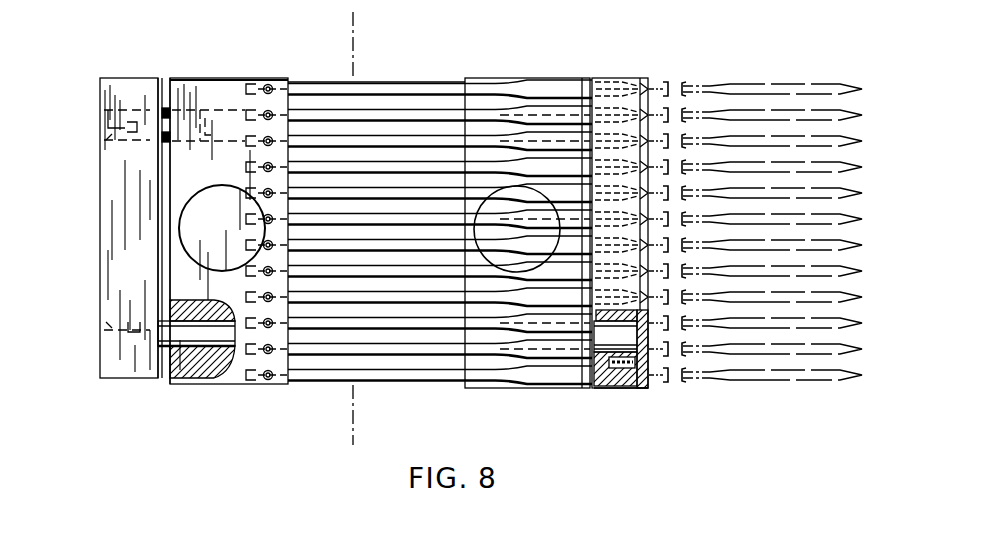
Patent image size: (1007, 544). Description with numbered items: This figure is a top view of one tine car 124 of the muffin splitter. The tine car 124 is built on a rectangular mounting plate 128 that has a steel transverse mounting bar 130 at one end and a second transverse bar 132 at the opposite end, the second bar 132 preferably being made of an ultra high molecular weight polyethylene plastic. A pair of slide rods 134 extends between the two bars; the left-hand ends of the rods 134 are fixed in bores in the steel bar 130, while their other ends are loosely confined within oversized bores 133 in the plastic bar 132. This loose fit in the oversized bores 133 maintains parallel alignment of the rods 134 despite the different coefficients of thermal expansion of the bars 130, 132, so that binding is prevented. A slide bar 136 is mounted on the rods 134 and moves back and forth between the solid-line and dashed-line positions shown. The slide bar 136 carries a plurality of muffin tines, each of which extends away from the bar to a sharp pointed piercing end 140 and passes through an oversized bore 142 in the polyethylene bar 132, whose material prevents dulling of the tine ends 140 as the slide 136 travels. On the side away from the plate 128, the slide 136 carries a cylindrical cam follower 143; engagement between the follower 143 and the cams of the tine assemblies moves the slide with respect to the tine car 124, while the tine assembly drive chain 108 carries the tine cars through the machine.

The tine assembly drive chain 108 is at (355, 400).
The tine car 124 is at (184, 70).
The rectangular mounting plate 128 is at (382, 80).
The transverse mounting bar 130 is at (128, 95).
The second transverse bar 132 is at (612, 80).
The oversized bores 133 is at (598, 352).
The slide rods 134 is at (325, 86).
The slide bar 136 is at (222, 90).
The sharp pointed piercing end 140 is at (790, 86).
The oversized bore 142 is at (665, 86).
The cylindrical cam follower 143 is at (182, 210).